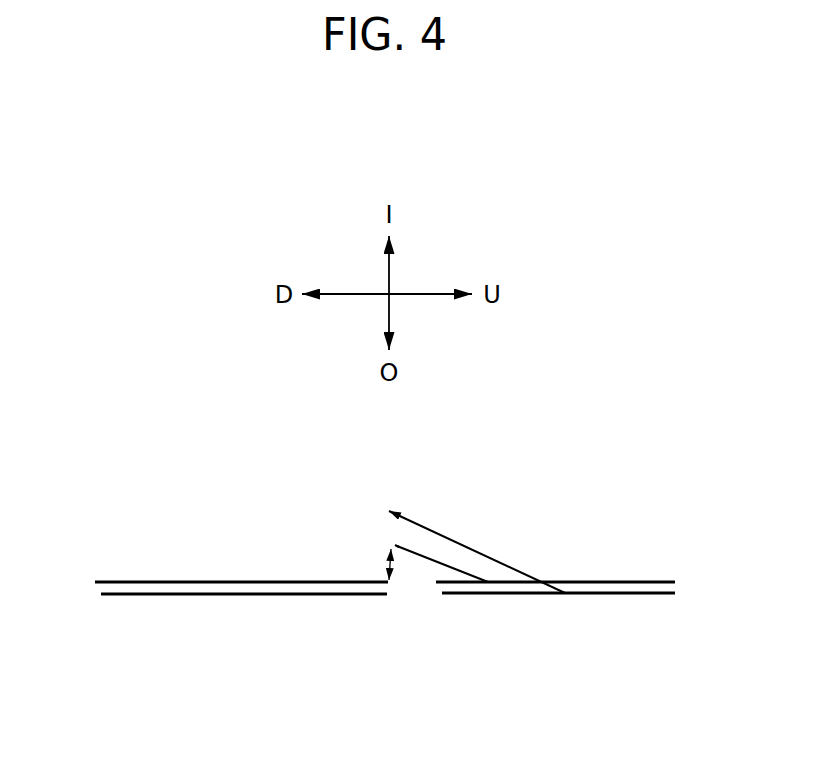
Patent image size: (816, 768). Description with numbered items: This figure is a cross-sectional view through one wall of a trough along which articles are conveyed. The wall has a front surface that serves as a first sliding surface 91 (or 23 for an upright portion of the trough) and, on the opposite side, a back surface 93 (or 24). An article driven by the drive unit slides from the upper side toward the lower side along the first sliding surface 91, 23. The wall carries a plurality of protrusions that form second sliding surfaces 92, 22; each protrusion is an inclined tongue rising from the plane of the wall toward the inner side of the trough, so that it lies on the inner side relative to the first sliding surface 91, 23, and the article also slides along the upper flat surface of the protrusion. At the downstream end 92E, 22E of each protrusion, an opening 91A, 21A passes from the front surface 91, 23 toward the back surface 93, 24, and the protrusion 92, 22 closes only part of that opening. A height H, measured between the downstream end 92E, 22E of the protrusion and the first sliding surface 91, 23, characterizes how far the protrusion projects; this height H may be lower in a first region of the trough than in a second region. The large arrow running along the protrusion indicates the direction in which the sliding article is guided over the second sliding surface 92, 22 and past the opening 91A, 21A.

The first sliding surface 23 is at (385, 542).
The first sliding surface 91 is at (227, 580).
The back surface 24 is at (388, 638).
The back surface 93 is at (268, 596).
The second sliding surface 22 is at (476, 533).
The second sliding surface 92 is at (446, 562).
The end on the downstream side 22E is at (325, 493).
The end on the downstream side 92E is at (395, 545).
The opening 21A is at (458, 513).
The opening 91A is at (411, 578).
The height of protrusion H is at (388, 562).